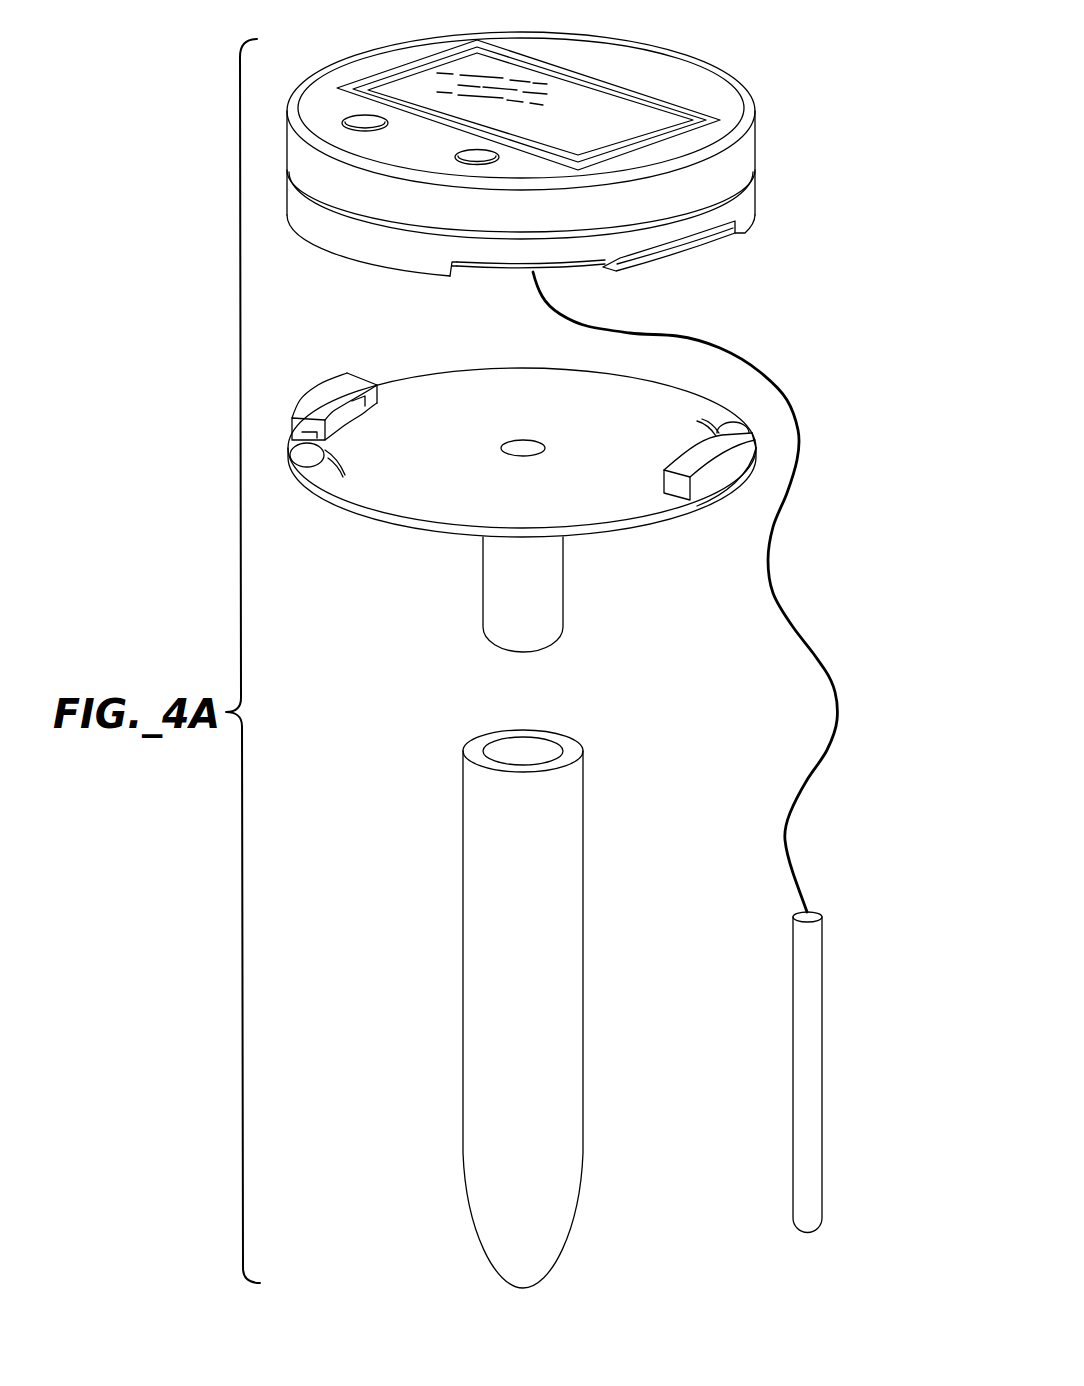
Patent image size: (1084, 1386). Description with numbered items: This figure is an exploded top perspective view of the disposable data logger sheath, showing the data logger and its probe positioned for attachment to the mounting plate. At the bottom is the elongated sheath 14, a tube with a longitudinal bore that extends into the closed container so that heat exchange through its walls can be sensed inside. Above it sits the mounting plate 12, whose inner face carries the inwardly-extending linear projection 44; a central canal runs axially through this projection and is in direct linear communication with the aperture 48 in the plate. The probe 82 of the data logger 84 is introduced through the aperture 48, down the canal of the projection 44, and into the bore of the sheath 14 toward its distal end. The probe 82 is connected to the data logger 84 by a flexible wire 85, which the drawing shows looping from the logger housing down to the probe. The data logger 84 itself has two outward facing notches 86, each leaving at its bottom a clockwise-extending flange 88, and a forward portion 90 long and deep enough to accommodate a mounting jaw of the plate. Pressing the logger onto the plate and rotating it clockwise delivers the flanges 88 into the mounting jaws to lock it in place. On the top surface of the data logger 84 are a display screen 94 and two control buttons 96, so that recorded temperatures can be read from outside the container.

The mounting plate 12 is at (438, 538).
The elongated sheath 14 is at (583, 923).
The linear projection 44 is at (563, 587).
The aperture 48 is at (533, 440).
The probe 82 is at (822, 962).
The data logger 84 is at (757, 193).
The flexible wire 85 is at (775, 588).
The outward facing notch 86 is at (577, 264).
The flange 88 is at (687, 256).
The forward portion 90 is at (472, 268).
The display screen 94 is at (565, 98).
The control buttons 96 is at (457, 158).